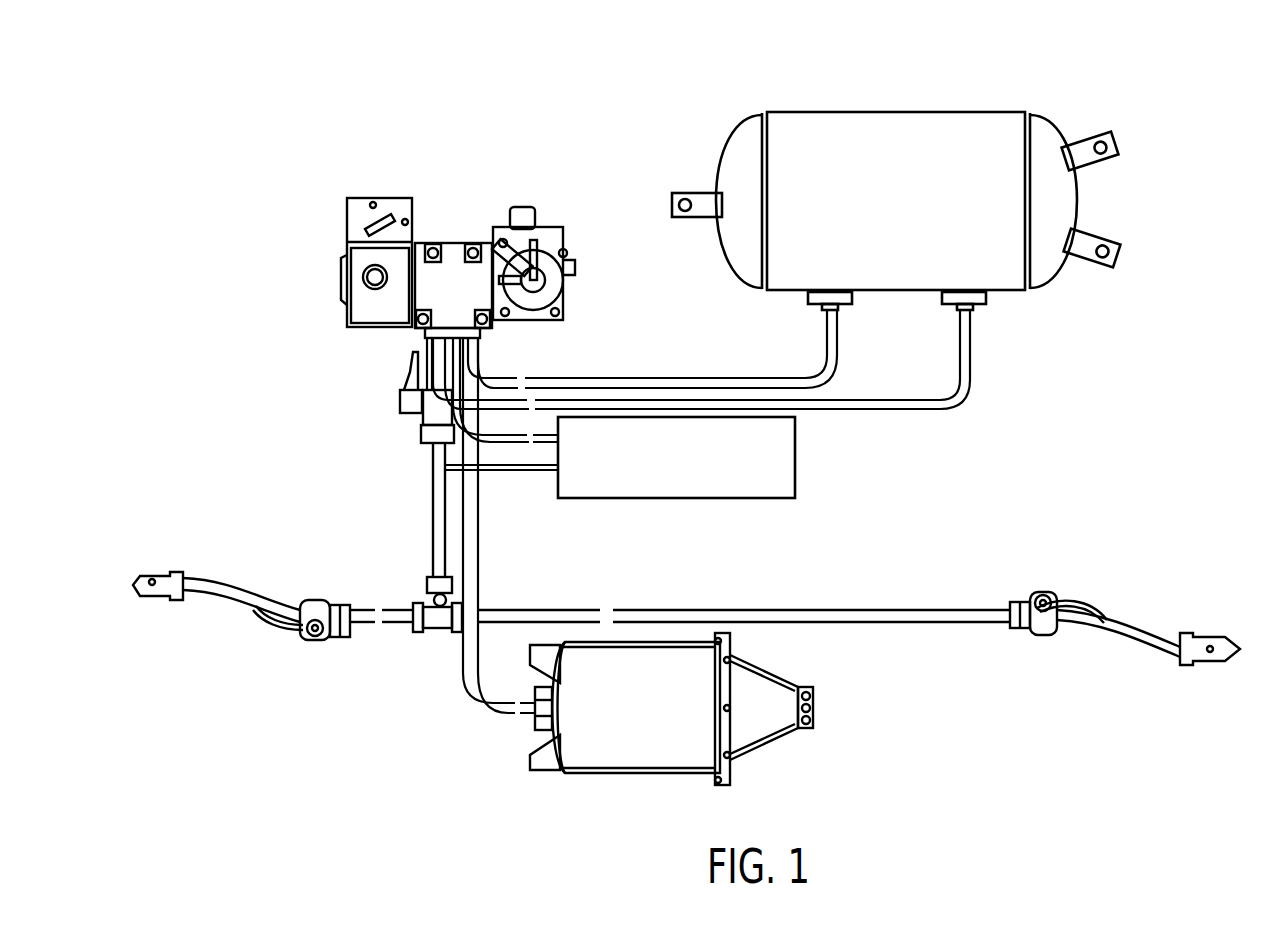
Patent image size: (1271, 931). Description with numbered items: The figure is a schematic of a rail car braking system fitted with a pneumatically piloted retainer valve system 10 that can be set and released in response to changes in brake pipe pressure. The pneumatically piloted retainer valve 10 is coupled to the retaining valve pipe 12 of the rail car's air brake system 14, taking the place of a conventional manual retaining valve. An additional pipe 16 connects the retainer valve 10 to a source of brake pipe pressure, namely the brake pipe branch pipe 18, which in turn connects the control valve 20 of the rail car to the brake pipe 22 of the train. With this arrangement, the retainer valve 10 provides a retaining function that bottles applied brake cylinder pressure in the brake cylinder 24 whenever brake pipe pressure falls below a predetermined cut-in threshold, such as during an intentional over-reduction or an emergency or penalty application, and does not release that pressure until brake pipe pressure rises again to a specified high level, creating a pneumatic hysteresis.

The pneumatically piloted retainer valve 10 is at (797, 458).
The retaining valve pipe 12 is at (517, 438).
The air brake system 14 is at (661, 116).
The additional pipe 16 is at (493, 470).
The brake pipe branch pipe 18 is at (440, 497).
The control valve 20 is at (455, 243).
The brake pipe 22 is at (740, 611).
The brake cylinder 24 is at (777, 742).